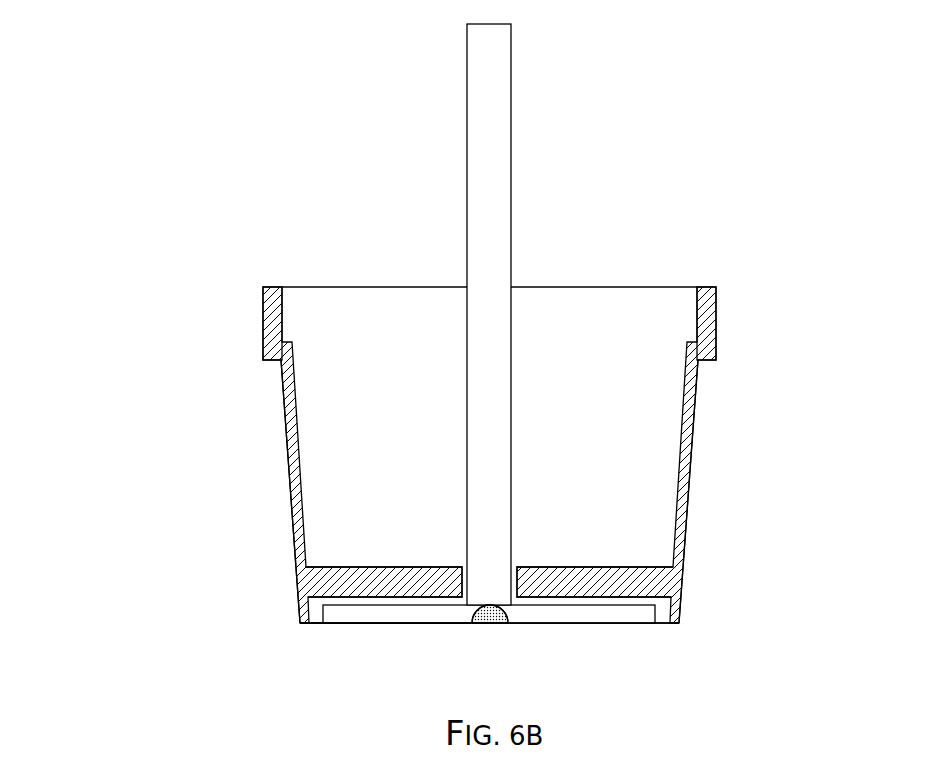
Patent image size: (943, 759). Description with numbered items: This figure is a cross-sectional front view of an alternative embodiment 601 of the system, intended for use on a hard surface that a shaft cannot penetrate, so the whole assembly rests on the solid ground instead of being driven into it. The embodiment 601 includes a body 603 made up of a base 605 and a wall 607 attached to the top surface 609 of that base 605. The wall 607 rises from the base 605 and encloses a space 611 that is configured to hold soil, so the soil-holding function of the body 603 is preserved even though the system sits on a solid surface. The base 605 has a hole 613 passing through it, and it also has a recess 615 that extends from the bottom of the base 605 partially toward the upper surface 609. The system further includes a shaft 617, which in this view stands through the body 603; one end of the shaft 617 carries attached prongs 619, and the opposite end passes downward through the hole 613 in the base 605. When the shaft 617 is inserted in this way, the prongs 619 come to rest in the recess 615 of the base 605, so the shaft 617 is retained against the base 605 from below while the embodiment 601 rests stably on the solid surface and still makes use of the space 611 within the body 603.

The embodiment 601 is at (415, 362).
The body 603 is at (244, 392).
The base 605 is at (321, 598).
The wall 607 is at (692, 457).
The top surface 609 is at (329, 562).
The space 611 is at (695, 293).
The hole 613 is at (518, 578).
The recess 615 is at (308, 623).
The shaft 617 is at (511, 127).
The prongs 619 is at (655, 614).